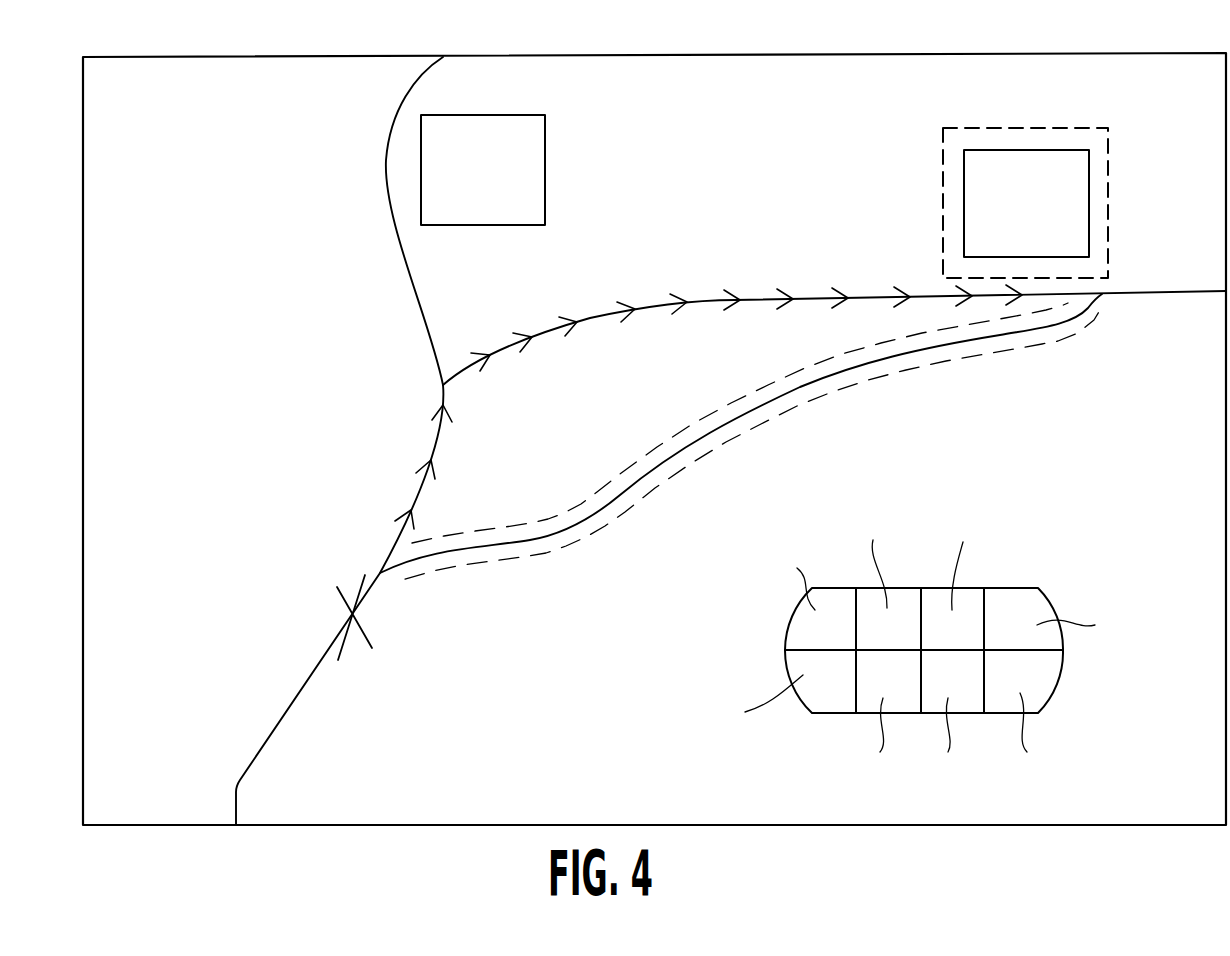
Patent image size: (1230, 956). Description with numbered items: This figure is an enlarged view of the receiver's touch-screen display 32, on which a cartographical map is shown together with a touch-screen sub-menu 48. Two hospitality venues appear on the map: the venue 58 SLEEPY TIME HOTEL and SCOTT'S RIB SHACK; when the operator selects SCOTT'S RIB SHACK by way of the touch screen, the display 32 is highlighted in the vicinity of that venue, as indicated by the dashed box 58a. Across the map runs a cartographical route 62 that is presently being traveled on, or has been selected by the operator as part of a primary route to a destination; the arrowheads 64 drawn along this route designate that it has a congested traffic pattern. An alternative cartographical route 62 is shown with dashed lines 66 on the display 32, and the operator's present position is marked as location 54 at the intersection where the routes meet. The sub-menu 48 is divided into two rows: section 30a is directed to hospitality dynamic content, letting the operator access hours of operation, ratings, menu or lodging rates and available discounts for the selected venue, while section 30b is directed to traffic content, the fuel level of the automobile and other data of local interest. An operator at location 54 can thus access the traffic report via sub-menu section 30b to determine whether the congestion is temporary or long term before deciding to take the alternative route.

The display 32 is at (755, 53).
The cartographical route 62 is at (398, 98).
The arrowheads 64 is at (685, 303).
The location 54 is at (352, 610).
The dashed lines 66 is at (1057, 352).
The venue 58 is at (545, 128).
The dashed box 58a is at (1108, 192).
The touch-screen sub-menu 48 is at (932, 639).
The sub-menu section 30a is at (1042, 590).
The sub-menu section 30b is at (1057, 685).